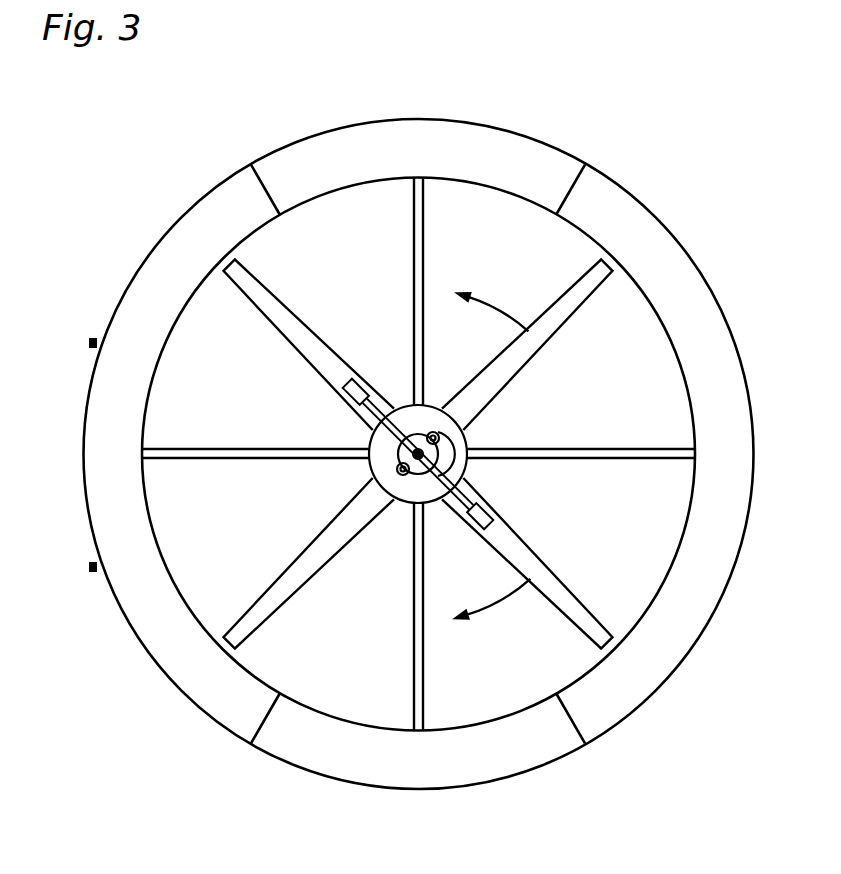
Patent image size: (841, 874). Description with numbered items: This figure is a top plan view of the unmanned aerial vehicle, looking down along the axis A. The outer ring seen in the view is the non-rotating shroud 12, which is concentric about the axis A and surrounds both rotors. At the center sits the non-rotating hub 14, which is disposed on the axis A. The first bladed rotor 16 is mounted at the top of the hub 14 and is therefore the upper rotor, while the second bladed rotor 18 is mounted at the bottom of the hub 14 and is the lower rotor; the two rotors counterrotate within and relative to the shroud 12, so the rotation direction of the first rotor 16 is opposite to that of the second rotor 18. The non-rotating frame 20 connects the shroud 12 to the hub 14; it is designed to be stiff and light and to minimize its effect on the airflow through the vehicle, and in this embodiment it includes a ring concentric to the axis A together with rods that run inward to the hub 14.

The non-rotating shroud 12 is at (692, 262).
The non-rotating hub 14 is at (405, 402).
The first bladed rotor 16 is at (523, 375).
The second bladed rotor 18 is at (525, 535).
The non-rotating frame 20 is at (243, 460).
The axis A is at (385, 440).